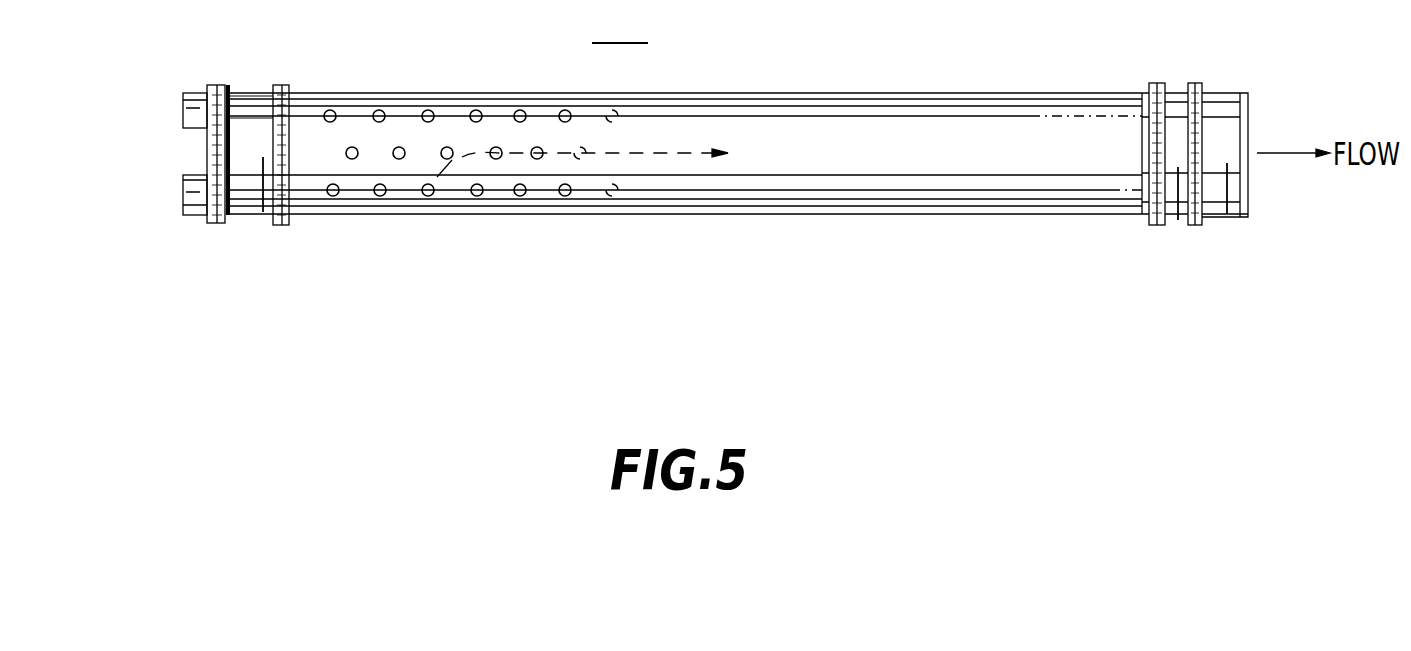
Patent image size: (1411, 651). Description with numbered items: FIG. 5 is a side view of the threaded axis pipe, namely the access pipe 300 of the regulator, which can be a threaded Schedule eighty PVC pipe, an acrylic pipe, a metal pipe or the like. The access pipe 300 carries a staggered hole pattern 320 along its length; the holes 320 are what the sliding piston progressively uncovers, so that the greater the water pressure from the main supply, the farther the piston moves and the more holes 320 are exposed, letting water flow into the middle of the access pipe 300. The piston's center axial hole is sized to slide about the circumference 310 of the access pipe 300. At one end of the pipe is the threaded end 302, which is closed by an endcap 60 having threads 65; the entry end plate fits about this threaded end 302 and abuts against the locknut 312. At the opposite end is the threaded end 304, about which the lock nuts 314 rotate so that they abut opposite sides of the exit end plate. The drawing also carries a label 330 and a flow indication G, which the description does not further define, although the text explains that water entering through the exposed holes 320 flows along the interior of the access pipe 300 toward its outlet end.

The endcap 60 is at (215, 84).
The threads 65 is at (224, 84).
The access pipe 300 is at (620, 25).
The threaded end 302 is at (253, 210).
The threaded end 304 is at (1232, 112).
The circumference 310 is at (677, 97).
The locknut 312 is at (282, 84).
The lock nuts 314 is at (1195, 83).
The holes 320 is at (476, 110).
The tube interior passage 330 is at (848, 147).
The gas flow G is at (428, 190).